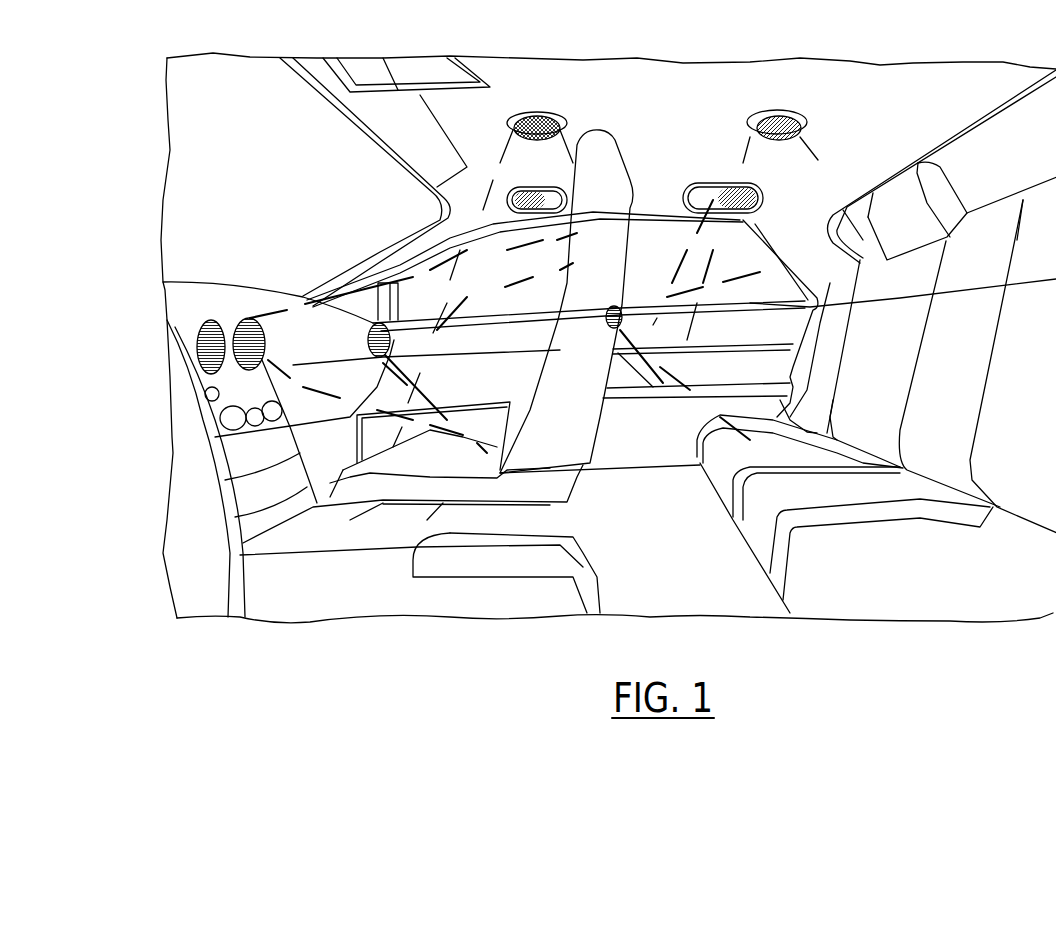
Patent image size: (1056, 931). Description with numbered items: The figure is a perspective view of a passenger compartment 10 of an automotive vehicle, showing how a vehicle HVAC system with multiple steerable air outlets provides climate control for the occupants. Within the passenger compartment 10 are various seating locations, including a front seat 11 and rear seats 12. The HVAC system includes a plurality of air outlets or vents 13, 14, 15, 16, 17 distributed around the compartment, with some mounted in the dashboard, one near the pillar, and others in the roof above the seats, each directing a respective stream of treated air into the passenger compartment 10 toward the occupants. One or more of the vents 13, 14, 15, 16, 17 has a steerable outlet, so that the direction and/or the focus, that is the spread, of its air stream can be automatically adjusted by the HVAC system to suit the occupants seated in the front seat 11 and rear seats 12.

The passenger compartment 10 is at (180, 128).
The front seat 11 is at (572, 453).
The rear seats 12 is at (767, 500).
The air outlet or vent 13 is at (200, 327).
The air outlet or vent 14 is at (250, 318).
The air outlet or vent 15 is at (377, 323).
The air outlet or vent 16 is at (547, 115).
The air outlet or vent 17 is at (757, 121).